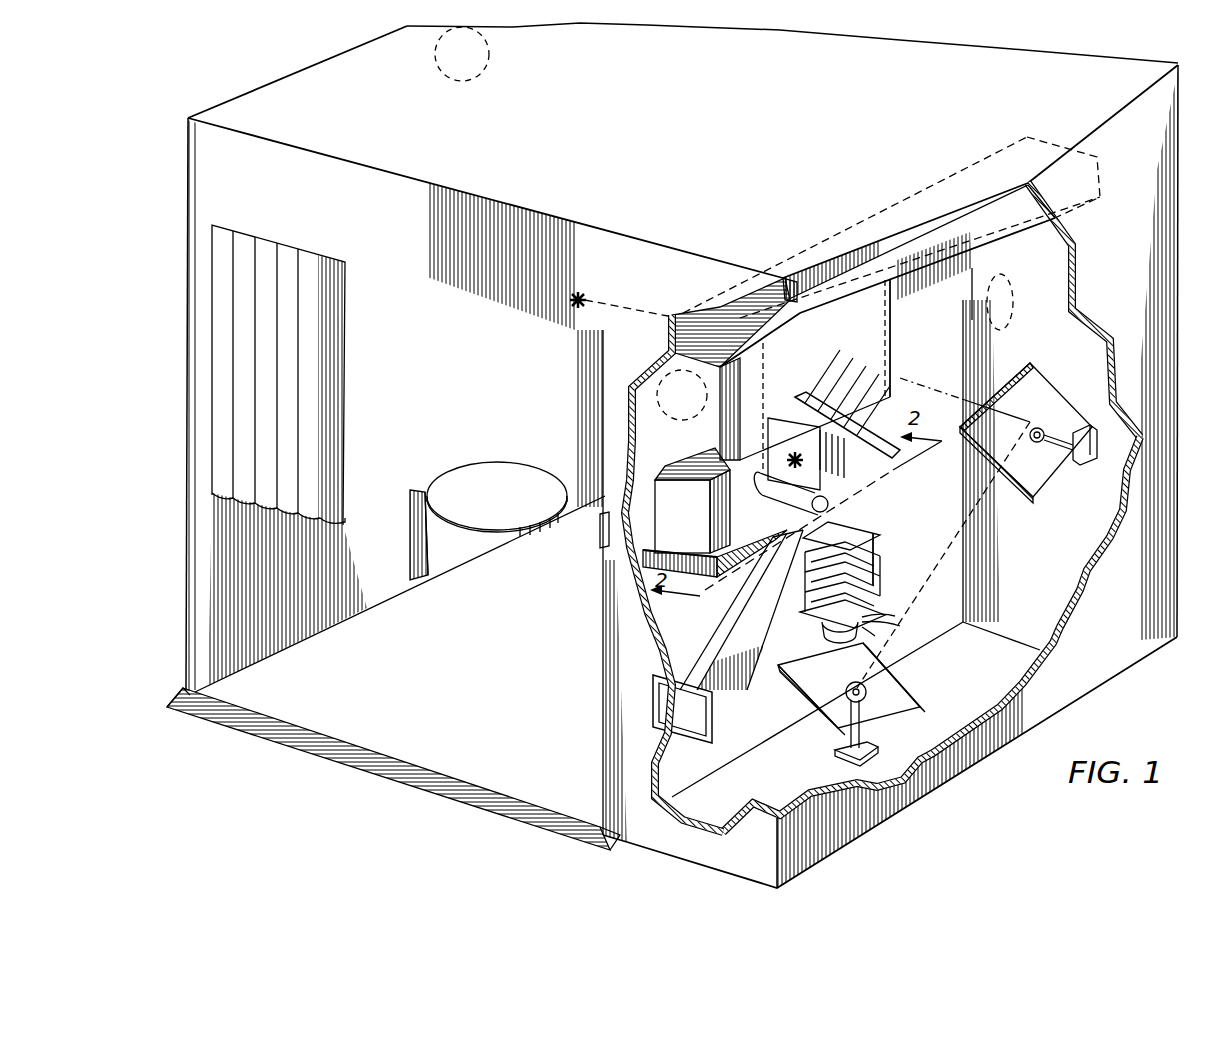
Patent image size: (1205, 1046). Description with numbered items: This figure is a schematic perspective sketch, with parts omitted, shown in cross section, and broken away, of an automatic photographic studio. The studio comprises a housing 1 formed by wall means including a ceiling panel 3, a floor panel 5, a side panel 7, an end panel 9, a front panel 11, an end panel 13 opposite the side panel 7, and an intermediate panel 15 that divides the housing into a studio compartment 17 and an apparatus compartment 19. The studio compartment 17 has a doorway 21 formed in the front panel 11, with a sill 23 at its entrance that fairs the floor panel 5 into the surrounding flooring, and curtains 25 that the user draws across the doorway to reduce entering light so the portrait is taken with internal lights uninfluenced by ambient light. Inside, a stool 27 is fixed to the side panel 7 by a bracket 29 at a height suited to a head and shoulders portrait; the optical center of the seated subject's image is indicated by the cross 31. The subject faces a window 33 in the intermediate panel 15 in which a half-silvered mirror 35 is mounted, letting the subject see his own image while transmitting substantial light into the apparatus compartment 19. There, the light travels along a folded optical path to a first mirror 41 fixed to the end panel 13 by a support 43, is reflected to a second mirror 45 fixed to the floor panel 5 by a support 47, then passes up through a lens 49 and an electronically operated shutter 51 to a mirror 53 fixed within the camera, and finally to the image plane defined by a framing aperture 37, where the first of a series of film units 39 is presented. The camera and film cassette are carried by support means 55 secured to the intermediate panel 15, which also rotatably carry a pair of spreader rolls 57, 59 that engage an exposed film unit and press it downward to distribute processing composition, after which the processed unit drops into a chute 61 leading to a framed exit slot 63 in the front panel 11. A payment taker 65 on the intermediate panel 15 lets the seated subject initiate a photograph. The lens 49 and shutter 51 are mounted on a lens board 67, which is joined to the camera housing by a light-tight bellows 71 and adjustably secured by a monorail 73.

The housing 1 is at (1140, 62).
The ceiling panel 3 is at (1128, 78).
The floor panel 5 is at (320, 705).
The side panel 7 is at (375, 580).
The end panel 9 is at (1100, 325).
The front panel 11 is at (712, 858).
The end panel 13 is at (860, 818).
The intermediate panel 15 is at (770, 720).
The studio compartment 17 is at (388, 304).
The apparatus compartment 19 is at (1088, 520).
The doorway 21 is at (572, 322).
The sill 23 is at (418, 788).
The curtains 25 is at (337, 455).
The stool 27 is at (497, 462).
The bracket 29 is at (410, 540).
The cross 31 is at (614, 260).
The window 33 is at (884, 362).
The half-silvered mirror 35 is at (882, 338).
The framing aperture 37 is at (822, 460).
The film units 39 is at (692, 519).
The first mirror 41 is at (1060, 405).
The support 43 is at (1060, 455).
The second mirror 45 is at (905, 688).
The support 47 is at (862, 733).
The lens 49 is at (846, 685).
The shutter 51 is at (895, 614).
The mirror 53 is at (885, 445).
The support means 55 is at (705, 576).
The spreader roll 57 is at (762, 484).
The spreader roll 59 is at (830, 503).
The chute 61 is at (760, 625).
The framed exit slot 63 is at (652, 690).
The payment taker 65 is at (598, 520).
The lens board 67 is at (820, 622).
The bellows 71 is at (878, 572).
The monorail 73 is at (878, 545).